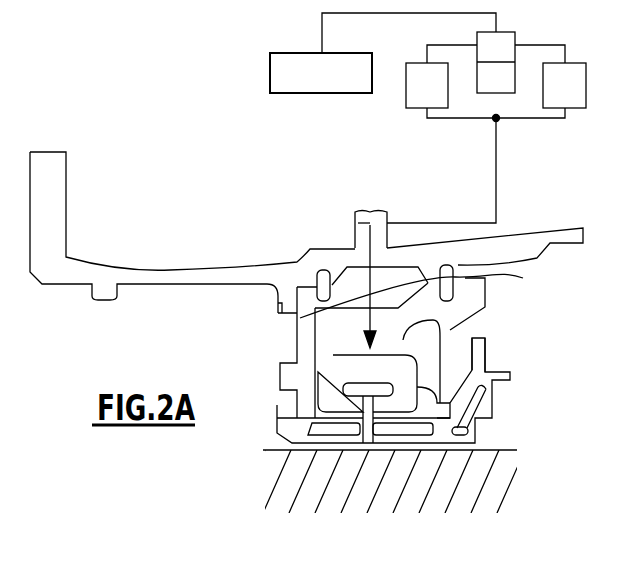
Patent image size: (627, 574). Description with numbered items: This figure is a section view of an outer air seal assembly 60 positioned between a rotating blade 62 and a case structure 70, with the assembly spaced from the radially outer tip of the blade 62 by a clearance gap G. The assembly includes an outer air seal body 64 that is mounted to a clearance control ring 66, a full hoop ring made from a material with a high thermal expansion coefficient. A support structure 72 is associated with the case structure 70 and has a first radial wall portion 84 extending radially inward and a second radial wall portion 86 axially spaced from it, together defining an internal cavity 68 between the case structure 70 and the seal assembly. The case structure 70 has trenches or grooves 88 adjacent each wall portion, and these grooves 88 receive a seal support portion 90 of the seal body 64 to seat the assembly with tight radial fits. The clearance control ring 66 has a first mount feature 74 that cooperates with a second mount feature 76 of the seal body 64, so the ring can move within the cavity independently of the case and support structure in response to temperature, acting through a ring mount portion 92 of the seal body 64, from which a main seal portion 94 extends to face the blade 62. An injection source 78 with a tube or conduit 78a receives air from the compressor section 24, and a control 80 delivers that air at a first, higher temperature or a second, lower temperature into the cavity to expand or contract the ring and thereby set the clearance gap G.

The compressor section 24 is at (333, 86).
The control 80 is at (515, 37).
The injection source 78 is at (398, 212).
The tube or conduit 78a is at (358, 223).
The case structure 70 is at (206, 268).
The trenches or grooves 88 is at (316, 272).
The second radial wall portion 86 is at (425, 291).
The internal cavity 68 is at (440, 337).
The outer air seal assembly 60 is at (541, 326).
The support structure 72 is at (290, 337).
The seal support portion 90 is at (279, 304).
The first radial wall portion 84 is at (296, 350).
The first mount feature 74 is at (392, 372).
The ring mount portion 92 is at (370, 415).
The clearance control ring 66 is at (335, 378).
The second mount feature 76 is at (354, 427).
The outer air seal body 64 is at (493, 407).
The main seal portion 94 is at (475, 438).
The clearance gap G is at (272, 447).
The blade 62 is at (270, 487).